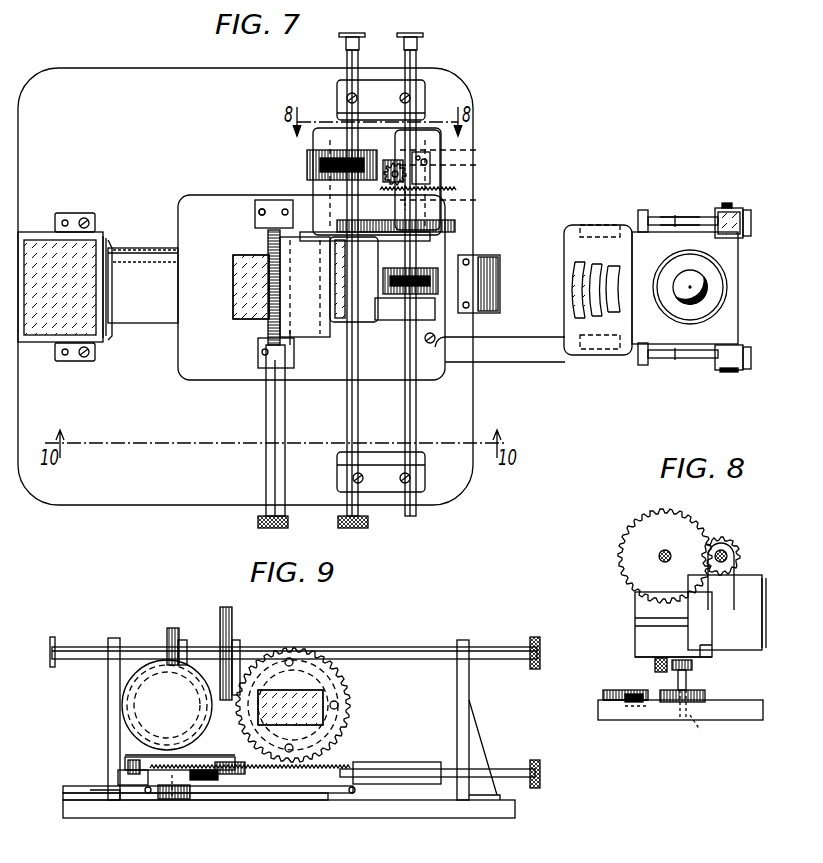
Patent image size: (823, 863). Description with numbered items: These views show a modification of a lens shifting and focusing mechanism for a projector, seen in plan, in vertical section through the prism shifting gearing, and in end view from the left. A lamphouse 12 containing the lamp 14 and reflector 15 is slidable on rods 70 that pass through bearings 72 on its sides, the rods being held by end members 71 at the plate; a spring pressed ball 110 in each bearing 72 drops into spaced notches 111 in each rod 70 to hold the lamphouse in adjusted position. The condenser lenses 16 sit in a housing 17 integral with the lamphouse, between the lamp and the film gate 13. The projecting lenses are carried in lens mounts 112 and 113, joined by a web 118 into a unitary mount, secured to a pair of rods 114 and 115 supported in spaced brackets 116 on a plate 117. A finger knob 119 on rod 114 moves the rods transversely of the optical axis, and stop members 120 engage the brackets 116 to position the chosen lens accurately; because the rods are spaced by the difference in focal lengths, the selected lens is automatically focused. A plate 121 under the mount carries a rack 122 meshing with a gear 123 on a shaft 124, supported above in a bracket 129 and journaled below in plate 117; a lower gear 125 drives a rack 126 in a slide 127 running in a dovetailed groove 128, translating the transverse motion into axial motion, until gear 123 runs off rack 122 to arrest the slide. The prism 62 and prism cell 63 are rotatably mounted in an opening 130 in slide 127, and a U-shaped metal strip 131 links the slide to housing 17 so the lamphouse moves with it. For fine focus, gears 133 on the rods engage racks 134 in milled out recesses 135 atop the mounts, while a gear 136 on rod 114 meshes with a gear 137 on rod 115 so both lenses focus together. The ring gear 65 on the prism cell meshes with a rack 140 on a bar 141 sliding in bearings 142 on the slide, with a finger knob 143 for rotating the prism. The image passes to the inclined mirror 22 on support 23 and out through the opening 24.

In FIG. 7, the lamphouse 12 is at (703, 336).
In FIG. 7, the film gate 13 is at (500, 288).
In FIG. 7, the lamp 14 is at (698, 290).
In FIG. 7, the reflector 15 is at (723, 272).
In FIG. 7, the condenser lenses 16 is at (610, 262).
In FIG. 7, the condenser lens housing 17 is at (588, 350).
In FIG. 7, the inclined mirror 22 is at (55, 343).
In FIG. 7, the mirror support 23 is at (83, 212).
In FIG. 7, the opening 24 is at (114, 246).
In FIG. 7, the prism 62 is at (233, 271).
In FIG. 9, the prism 62 is at (334, 722).
In FIG. 7, the prism cell 63 is at (310, 363).
In FIG. 7, the ring gear 65 is at (262, 286).
In FIG. 9, the ring gear 65 is at (334, 694).
In FIG. 7, the rods 70 is at (698, 217).
In FIG. 7, the shaft clamp 71 is at (643, 210).
In FIG. 7, the bearings 72 is at (728, 208).
In FIG. 7, the spring pressed ball 110 is at (736, 212).
In FIG. 7, the notches 111 is at (675, 216).
In FIG. 7, the lens mount 112 is at (318, 132).
In FIG. 8, the lens mount 112 is at (753, 575).
In FIG. 9, the lens mount 112 is at (128, 686).
In FIG. 7, the lens mount 113 is at (334, 338).
In FIG. 7, the rod 114 is at (347, 64).
In FIG. 8, the rod 114 is at (734, 552).
In FIG. 9, the rod 114 is at (405, 647).
In FIG. 7, the rod 115 is at (416, 66).
In FIG. 8, the rod 115 is at (659, 556).
In FIG. 7, the brackets 116 is at (426, 94).
In FIG. 9, the brackets 116 is at (108, 728).
In FIG. 7, the plate 117 is at (117, 68).
In FIG. 9, the plate 117 is at (492, 818).
In FIG. 7, the web 118 is at (335, 224).
In FIG. 8, the web 118 is at (644, 614).
In FIG. 9, the web 118 is at (232, 757).
In FIG. 7, the finger knob 119 is at (370, 527).
In FIG. 9, the finger knob 119 is at (536, 636).
In FIG. 7, the stop member 120 is at (410, 32).
In FIG. 9, the stop member 120 is at (52, 638).
In FIG. 7, the plate 121 is at (441, 144).
In FIG. 8, the plate 121 is at (632, 652).
In FIG. 9, the plate 121 is at (125, 758).
In FIG. 7, the rack 122 is at (484, 163).
In FIG. 8, the rack 122 is at (655, 670).
In FIG. 9, the rack 122 is at (123, 768).
In FIG. 8, the gear 123 is at (692, 670).
In FIG. 9, the gear 123 is at (128, 772).
In FIG. 7, the shaft 124 is at (480, 191).
In FIG. 8, the shaft 124 is at (709, 725).
In FIG. 9, the shaft 124 is at (172, 800).
In FIG. 8, the gear 125 is at (673, 702).
In FIG. 9, the gear 125 is at (162, 792).
In FIG. 7, the rack 126 is at (458, 188).
In FIG. 8, the rack 126 is at (626, 702).
In FIG. 9, the rack 126 is at (204, 780).
In FIG. 7, the slide 127 is at (180, 368).
In FIG. 8, the slide 127 is at (738, 702).
In FIG. 9, the slide 127 is at (320, 796).
In FIG. 7, the dovetailed groove 128 is at (143, 285).
In FIG. 9, the dovetailed groove 128 is at (342, 798).
In FIG. 7, the bracket 129 is at (431, 168).
In FIG. 8, the bracket 129 is at (608, 700).
In FIG. 9, the bracket 129 is at (150, 782).
In FIG. 7, the opening 130 is at (268, 336).
In FIG. 9, the opening 130 is at (342, 696).
In FIG. 7, the U-shaped metal strip 131 is at (535, 362).
In FIG. 7, the gears 133 is at (320, 180).
In FIG. 8, the gears 133 is at (724, 538).
In FIG. 9, the gears 133 is at (172, 628).
In FIG. 7, the racks 134 is at (255, 212).
In FIG. 9, the racks 134 is at (186, 676).
In FIG. 7, the milled out recesses 135 is at (307, 158).
In FIG. 9, the milled out recesses 135 is at (132, 665).
In FIG. 7, the gear 136 is at (305, 287).
In FIG. 9, the gear 136 is at (234, 642).
In FIG. 7, the gear 137 is at (455, 232).
In FIG. 8, the gear 137 is at (668, 520).
In FIG. 9, the gear 137 is at (226, 610).
In FIG. 7, the rack 140 is at (258, 362).
In FIG. 9, the rack 140 is at (336, 760).
In FIG. 7, the bar 141 is at (266, 470).
In FIG. 9, the bar 141 is at (458, 792).
In FIG. 7, the bearings 142 is at (260, 220).
In FIG. 9, the bearings 142 is at (275, 794).
In FIG. 7, the finger knob 143 is at (258, 525).
In FIG. 9, the finger knob 143 is at (544, 790).